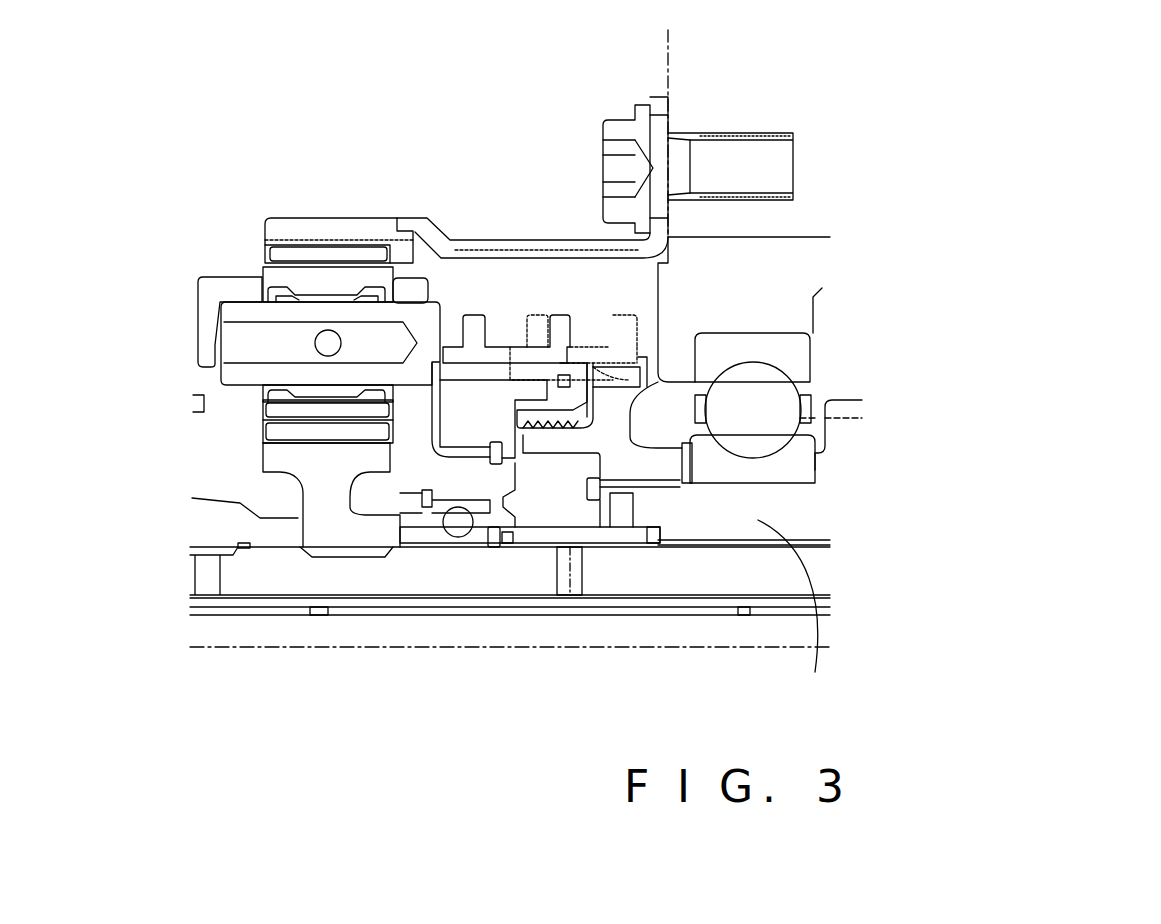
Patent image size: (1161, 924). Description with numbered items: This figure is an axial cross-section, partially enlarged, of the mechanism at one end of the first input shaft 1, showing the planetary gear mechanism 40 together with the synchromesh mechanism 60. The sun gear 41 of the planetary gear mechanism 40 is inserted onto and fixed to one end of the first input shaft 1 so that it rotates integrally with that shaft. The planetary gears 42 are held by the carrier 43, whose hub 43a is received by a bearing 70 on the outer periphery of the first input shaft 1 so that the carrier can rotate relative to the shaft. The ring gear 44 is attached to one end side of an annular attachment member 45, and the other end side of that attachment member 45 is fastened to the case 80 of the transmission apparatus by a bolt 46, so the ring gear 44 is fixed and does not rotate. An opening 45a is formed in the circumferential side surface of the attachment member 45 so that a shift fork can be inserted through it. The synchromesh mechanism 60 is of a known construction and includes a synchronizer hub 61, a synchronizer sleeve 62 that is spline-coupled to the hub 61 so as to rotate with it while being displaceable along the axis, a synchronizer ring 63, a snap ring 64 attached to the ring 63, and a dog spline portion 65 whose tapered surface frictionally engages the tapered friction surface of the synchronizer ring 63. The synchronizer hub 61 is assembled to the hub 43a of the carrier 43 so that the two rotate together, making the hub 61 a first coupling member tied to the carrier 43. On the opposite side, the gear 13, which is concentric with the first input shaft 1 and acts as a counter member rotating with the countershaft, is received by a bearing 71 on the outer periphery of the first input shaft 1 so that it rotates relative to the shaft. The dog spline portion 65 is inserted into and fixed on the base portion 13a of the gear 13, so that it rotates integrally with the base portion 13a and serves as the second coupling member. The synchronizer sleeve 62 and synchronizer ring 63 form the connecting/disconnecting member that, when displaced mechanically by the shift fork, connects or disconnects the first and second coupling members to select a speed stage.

The first input shaft 1 is at (482, 578).
The gear 13 is at (845, 400).
The base portion 13a is at (820, 613).
The planetary gear mechanism 40 is at (178, 322).
The sun gear 41 is at (277, 455).
The planetary gears 42 is at (270, 412).
The carrier 43 is at (228, 370).
The hub 43a is at (500, 490).
The ring gear 44 is at (268, 252).
The annular attachment member 45 is at (418, 218).
The opening 45a is at (493, 243).
The bolt 46 is at (610, 113).
The synchromesh mechanism 60 is at (592, 328).
The synchronizer hub 61 is at (478, 408).
The synchronizer sleeve 62 is at (473, 318).
The synchronizer ring 63 is at (637, 420).
The snap ring 64 is at (567, 380).
The dog spline portion 65 is at (573, 410).
The bearing 70 is at (459, 524).
The bearing 71 is at (763, 380).
The case 80 is at (668, 62).